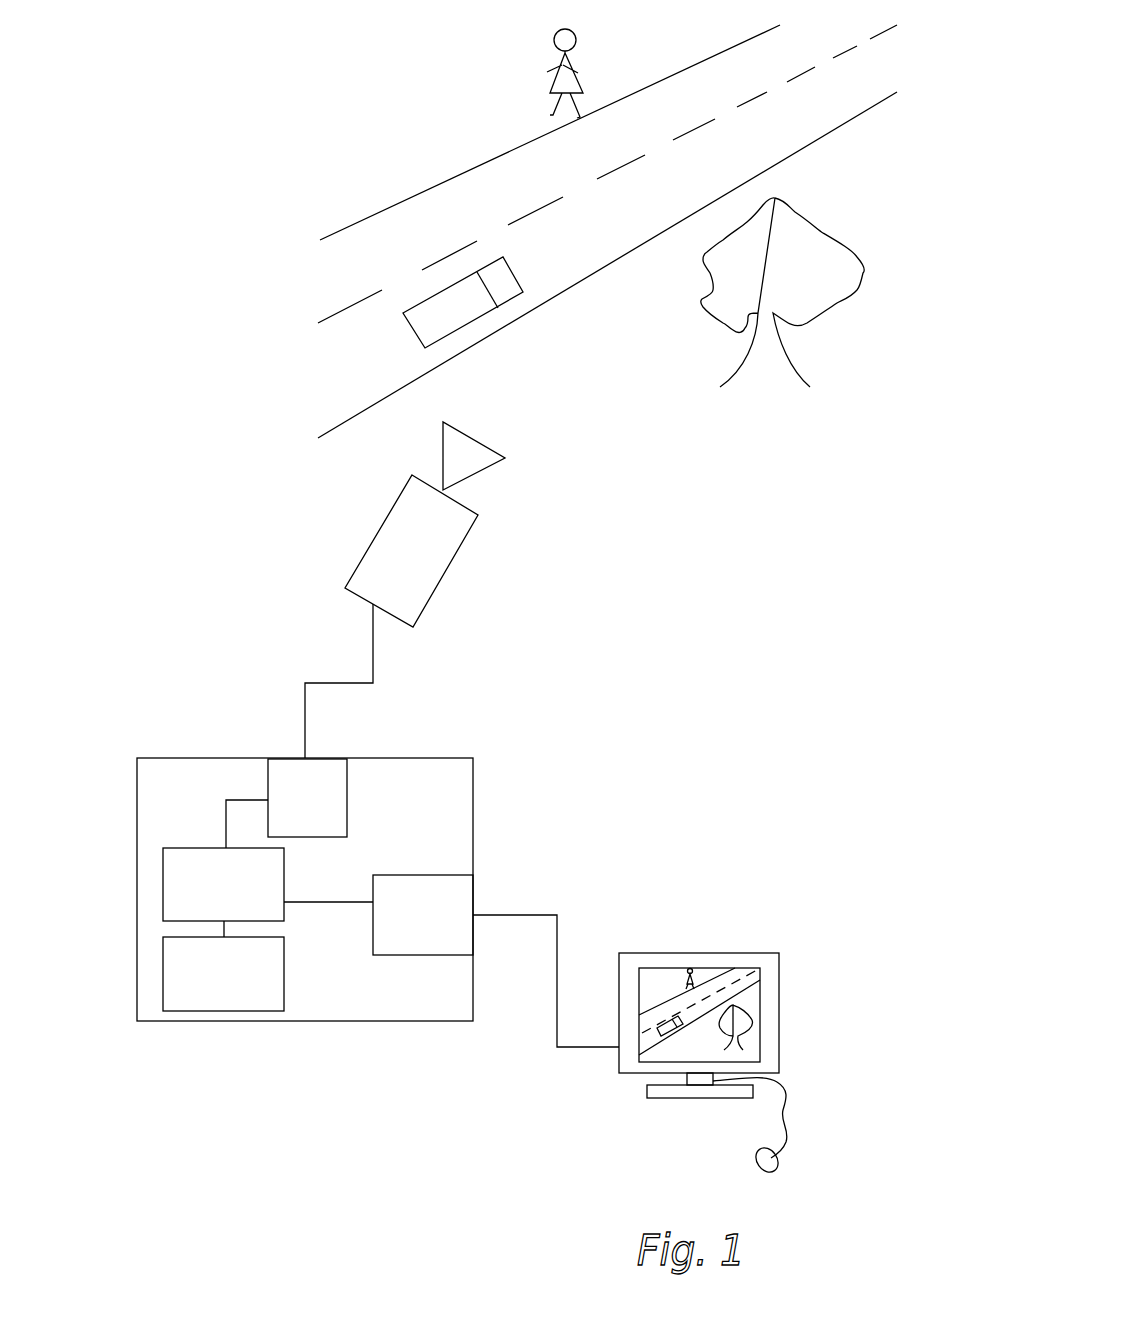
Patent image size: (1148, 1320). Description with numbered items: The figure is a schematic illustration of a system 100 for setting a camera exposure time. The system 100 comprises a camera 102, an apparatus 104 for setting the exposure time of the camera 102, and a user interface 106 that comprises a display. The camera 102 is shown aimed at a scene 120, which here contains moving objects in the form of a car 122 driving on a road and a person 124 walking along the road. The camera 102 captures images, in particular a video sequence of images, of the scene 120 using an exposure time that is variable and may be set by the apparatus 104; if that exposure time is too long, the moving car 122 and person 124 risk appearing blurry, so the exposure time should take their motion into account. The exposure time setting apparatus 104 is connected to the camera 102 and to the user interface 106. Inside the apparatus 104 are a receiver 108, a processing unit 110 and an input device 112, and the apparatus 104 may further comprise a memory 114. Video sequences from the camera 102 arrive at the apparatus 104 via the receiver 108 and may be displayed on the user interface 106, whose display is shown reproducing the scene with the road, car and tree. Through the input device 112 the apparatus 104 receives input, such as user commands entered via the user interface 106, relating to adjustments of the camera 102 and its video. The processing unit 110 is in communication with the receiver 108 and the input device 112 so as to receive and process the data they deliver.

The system 100 is at (216, 553).
The camera 102 is at (368, 545).
The apparatus for setting an exposure time 104 is at (378, 874).
The user interface 106 is at (713, 953).
The receiver 108 is at (328, 812).
The processing unit 110 is at (203, 901).
The input device 112 is at (403, 931).
The memory 114 is at (203, 989).
The scene 120 is at (346, 90).
The car 122 is at (487, 315).
The person 124 is at (573, 72).